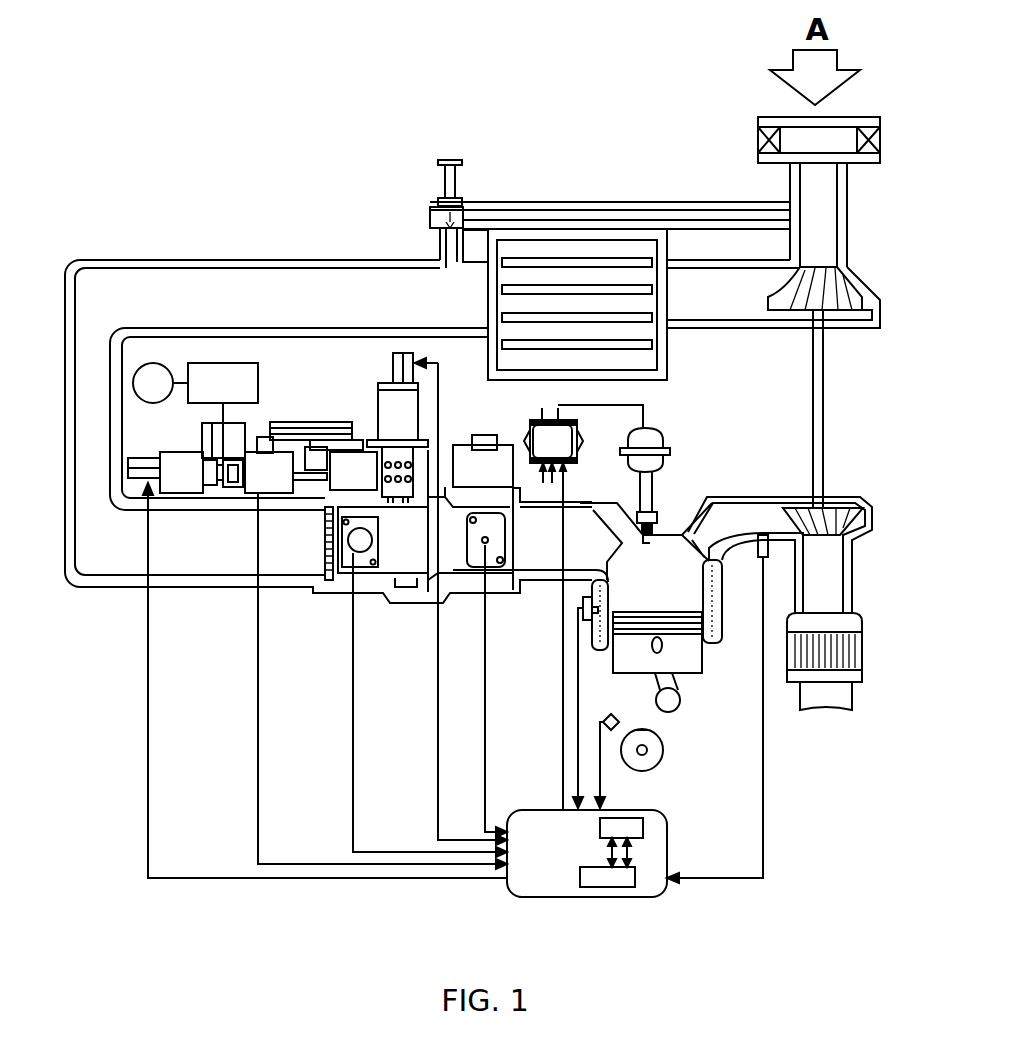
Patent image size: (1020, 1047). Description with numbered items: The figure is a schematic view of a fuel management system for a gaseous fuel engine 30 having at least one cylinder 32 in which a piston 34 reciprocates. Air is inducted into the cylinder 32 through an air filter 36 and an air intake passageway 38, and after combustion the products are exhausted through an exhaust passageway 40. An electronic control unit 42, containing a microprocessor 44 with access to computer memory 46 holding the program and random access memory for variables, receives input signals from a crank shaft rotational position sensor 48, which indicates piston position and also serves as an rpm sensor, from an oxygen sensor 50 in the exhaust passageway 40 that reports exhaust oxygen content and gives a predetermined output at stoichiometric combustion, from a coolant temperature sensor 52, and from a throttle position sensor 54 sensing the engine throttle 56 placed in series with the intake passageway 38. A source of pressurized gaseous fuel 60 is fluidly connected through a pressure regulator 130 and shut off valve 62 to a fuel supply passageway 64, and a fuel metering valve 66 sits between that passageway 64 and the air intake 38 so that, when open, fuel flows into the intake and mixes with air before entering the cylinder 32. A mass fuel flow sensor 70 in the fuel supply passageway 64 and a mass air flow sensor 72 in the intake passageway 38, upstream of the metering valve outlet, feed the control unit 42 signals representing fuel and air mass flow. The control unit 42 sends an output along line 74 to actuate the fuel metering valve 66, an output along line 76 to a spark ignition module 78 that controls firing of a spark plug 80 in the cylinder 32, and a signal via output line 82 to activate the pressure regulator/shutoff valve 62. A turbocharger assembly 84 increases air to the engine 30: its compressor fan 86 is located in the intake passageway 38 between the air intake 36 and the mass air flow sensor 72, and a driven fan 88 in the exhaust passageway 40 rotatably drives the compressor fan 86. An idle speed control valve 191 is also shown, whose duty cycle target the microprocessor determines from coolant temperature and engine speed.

The gaseous fuel engine 30 is at (720, 633).
The cylinder 32 is at (605, 598).
The piston 34 is at (680, 662).
The air filter 36 is at (758, 138).
The air intake passageway 38 is at (347, 282).
The exhaust passageway 40 is at (710, 517).
The electronic control unit 42 is at (610, 850).
The microprocessor 44 is at (615, 887).
The computer memory 46 is at (637, 818).
The crank shaft rotational position sensor 48 is at (615, 716).
The oxygen sensor 50 is at (770, 550).
The coolant temperature sensor 52 is at (587, 607).
The throttle position sensor 54 is at (483, 553).
The engine throttle 56 is at (487, 540).
The source of pressurized gaseous fuel 60 is at (152, 363).
The shut off valve 62 is at (175, 487).
The fuel supply passageway 64 is at (273, 473).
The fuel metering valve 66 is at (413, 407).
The mass fuel flow sensor 70 is at (335, 423).
The mass air flow sensor 72 is at (363, 540).
The line 74 is at (438, 752).
The line 76 is at (565, 765).
The spark ignition module 78 is at (550, 415).
The spark plug 80 is at (638, 500).
The output line 82 is at (150, 828).
The turbocharger assembly 84 is at (820, 430).
The compressor fan 86 is at (837, 277).
The driven fan 88 is at (850, 518).
The pressure regulator 130 is at (258, 377).
The idle speed control valve 191 is at (490, 437).